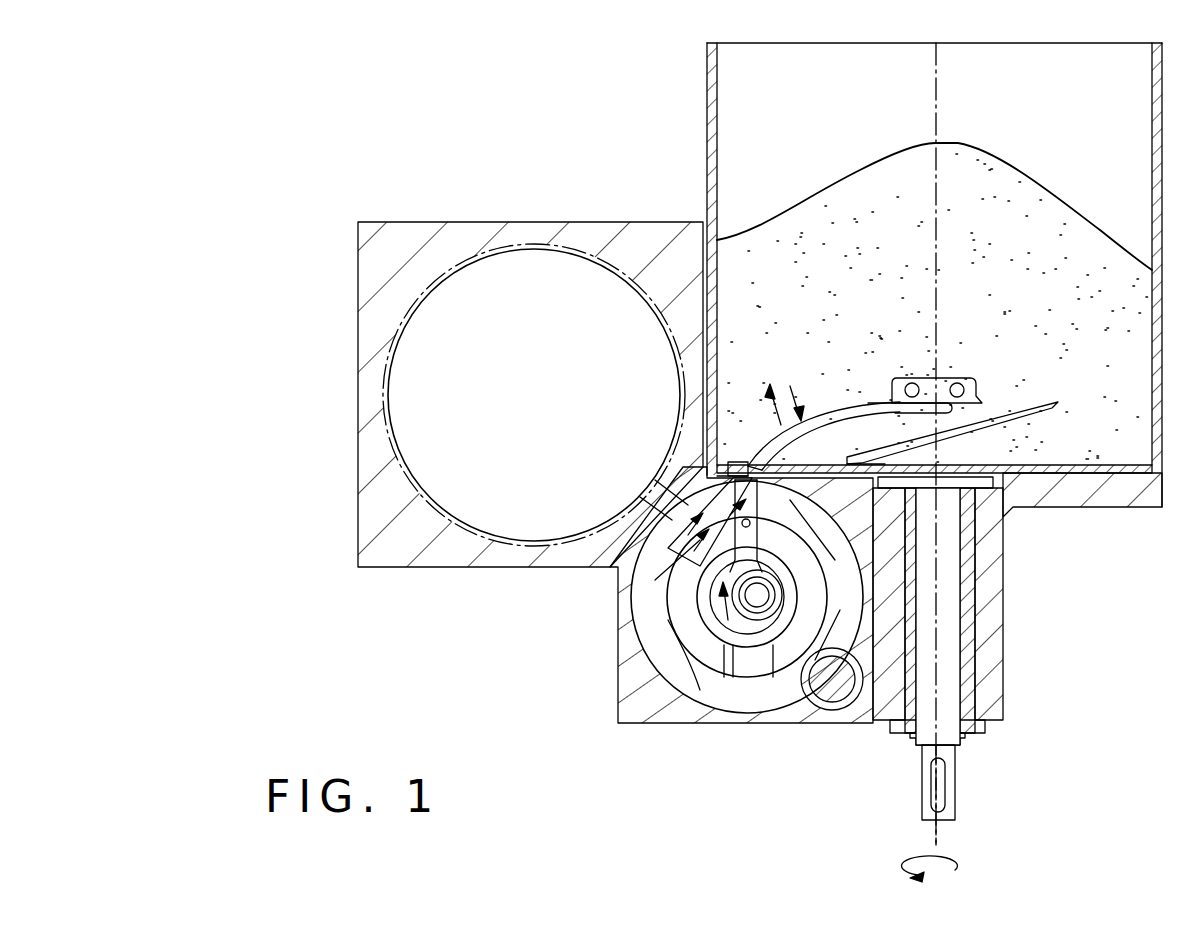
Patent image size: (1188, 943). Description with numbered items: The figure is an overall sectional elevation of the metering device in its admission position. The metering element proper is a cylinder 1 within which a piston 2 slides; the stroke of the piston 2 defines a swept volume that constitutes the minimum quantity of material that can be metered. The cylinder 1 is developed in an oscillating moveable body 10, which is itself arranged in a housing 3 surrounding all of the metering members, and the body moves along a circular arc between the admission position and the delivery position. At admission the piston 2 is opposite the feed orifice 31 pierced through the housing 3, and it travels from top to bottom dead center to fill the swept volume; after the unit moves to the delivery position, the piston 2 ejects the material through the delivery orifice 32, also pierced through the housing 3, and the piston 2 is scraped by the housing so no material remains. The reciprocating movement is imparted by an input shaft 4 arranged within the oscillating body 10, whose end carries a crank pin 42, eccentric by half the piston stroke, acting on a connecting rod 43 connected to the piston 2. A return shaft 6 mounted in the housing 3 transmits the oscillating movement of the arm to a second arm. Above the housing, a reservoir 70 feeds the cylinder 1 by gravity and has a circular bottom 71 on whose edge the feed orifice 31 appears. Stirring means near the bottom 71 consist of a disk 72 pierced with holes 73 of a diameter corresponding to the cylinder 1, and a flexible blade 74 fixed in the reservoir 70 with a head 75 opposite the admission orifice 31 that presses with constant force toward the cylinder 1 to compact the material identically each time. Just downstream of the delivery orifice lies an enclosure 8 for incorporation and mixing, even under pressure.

The cylinder 1 is at (635, 548).
The piston 2 is at (670, 570).
The housing 3 is at (752, 706).
The input shaft 4 is at (747, 612).
The return shaft 6 is at (830, 708).
The enclosure 8 is at (407, 429).
The oscillating moveable body 10 is at (700, 690).
The feed orifice 31 is at (718, 478).
The delivery orifice 32 is at (645, 500).
The crank pin 42 is at (786, 594).
The connecting rod 43 is at (885, 548).
The reservoir 70 is at (1005, 56).
The circular bottom 71 is at (1078, 458).
The disk 72 is at (1030, 466).
The holes 73 is at (1120, 466).
The flexible blade 74 is at (826, 412).
The head 75 is at (737, 462).